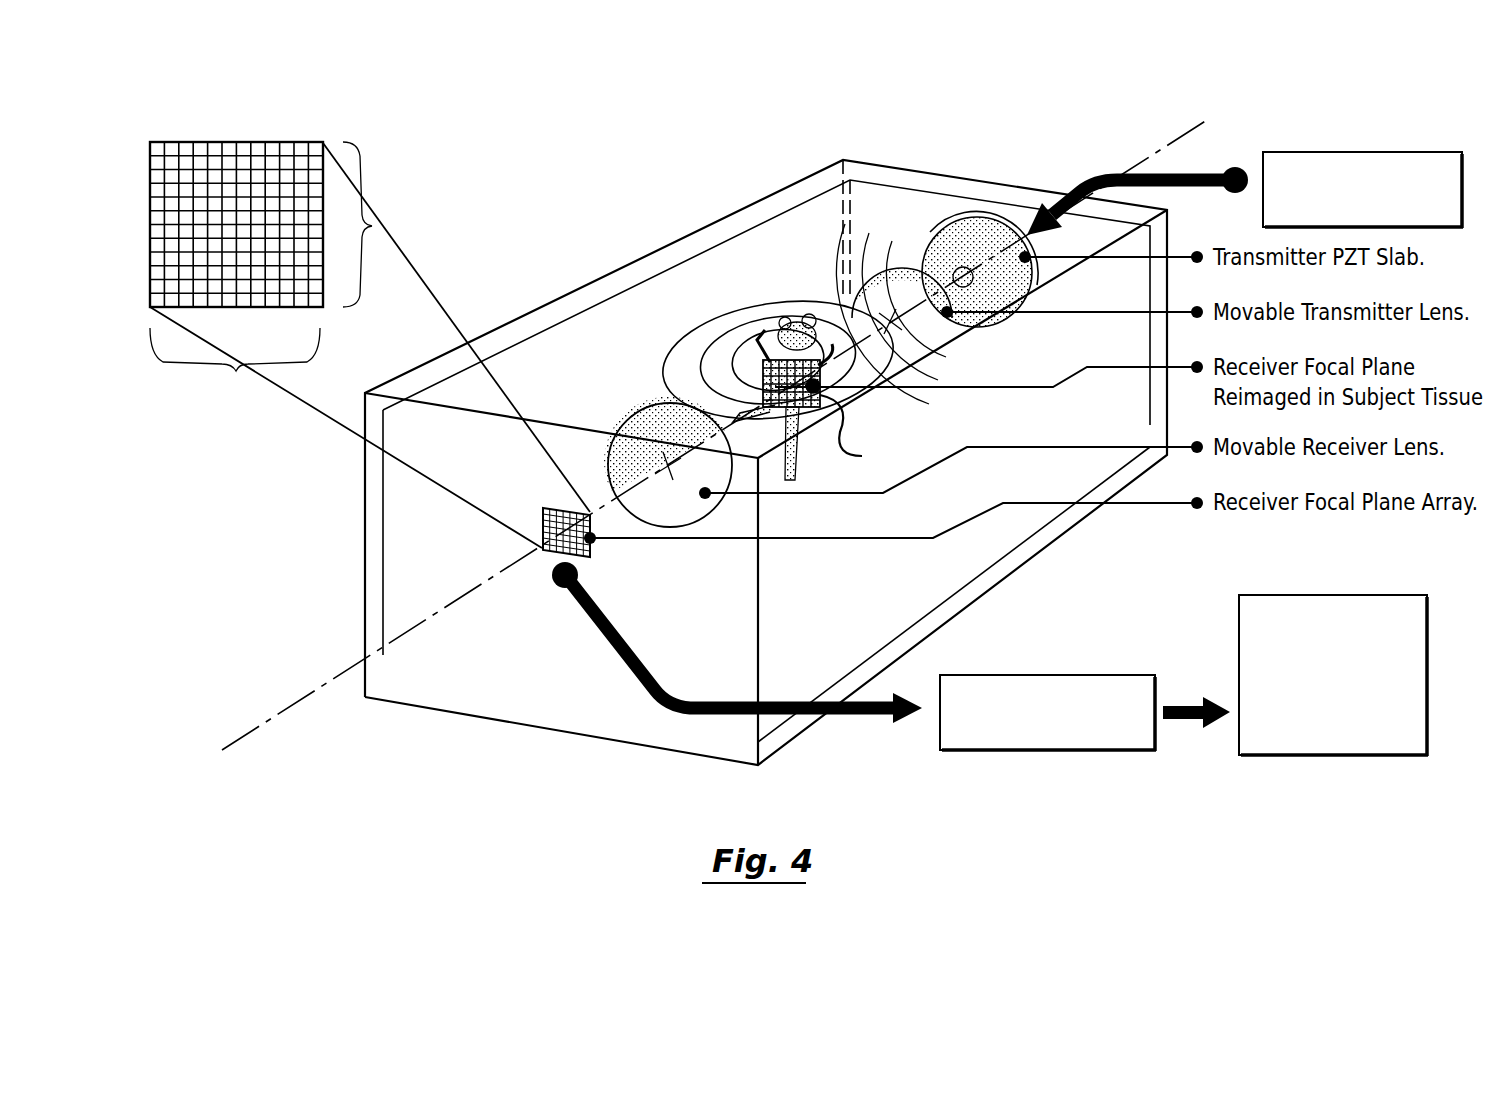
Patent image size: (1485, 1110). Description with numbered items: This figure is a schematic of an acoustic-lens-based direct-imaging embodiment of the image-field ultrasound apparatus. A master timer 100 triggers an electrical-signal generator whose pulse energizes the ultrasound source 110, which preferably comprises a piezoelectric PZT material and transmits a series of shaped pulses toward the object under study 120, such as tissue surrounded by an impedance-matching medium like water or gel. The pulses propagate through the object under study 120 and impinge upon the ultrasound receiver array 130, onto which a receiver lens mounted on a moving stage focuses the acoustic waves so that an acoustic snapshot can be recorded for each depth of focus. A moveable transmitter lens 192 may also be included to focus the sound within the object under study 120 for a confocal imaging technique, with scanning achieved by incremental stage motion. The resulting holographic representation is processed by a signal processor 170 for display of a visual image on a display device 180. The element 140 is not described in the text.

The master timer 100 is at (1357, 152).
The ultrasound source 110 is at (977, 216).
The object under study 120 is at (795, 323).
The ultrasound receiver array 130 is at (269, 142).
The water tank 140 is at (630, 345).
The signal processor 170 is at (1038, 675).
The display device 180 is at (1349, 595).
The transmitter lens 192 is at (880, 268).